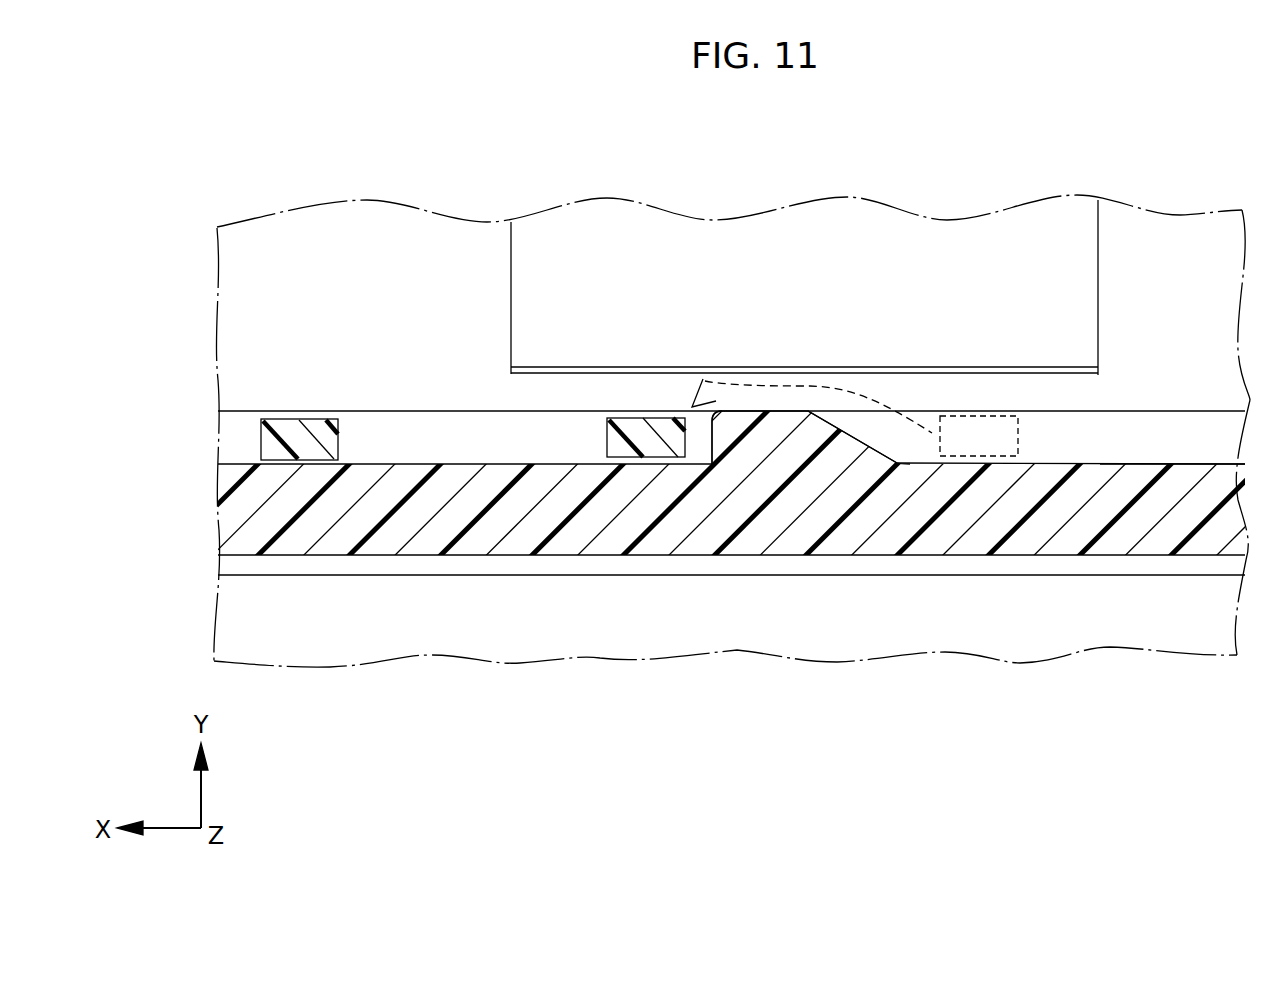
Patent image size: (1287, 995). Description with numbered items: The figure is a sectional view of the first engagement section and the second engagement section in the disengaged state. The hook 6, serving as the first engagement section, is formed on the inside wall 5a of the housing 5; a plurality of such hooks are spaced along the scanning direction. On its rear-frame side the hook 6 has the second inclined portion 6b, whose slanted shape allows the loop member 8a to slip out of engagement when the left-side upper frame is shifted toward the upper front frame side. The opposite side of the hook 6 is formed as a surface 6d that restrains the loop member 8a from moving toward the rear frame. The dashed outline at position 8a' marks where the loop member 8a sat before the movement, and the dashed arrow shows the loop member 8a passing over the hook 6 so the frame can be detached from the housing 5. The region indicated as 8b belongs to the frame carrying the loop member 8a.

The housing 5 is at (1063, 548).
The inside wall 5a is at (1158, 463).
The hook 6 is at (777, 430).
The second inclined portion 6b is at (853, 433).
The surface 6d is at (707, 442).
The loop member 8a is at (646, 299).
The position of loop member before movement 8a' is at (979, 305).
The insulating layer 8b is at (607, 443).